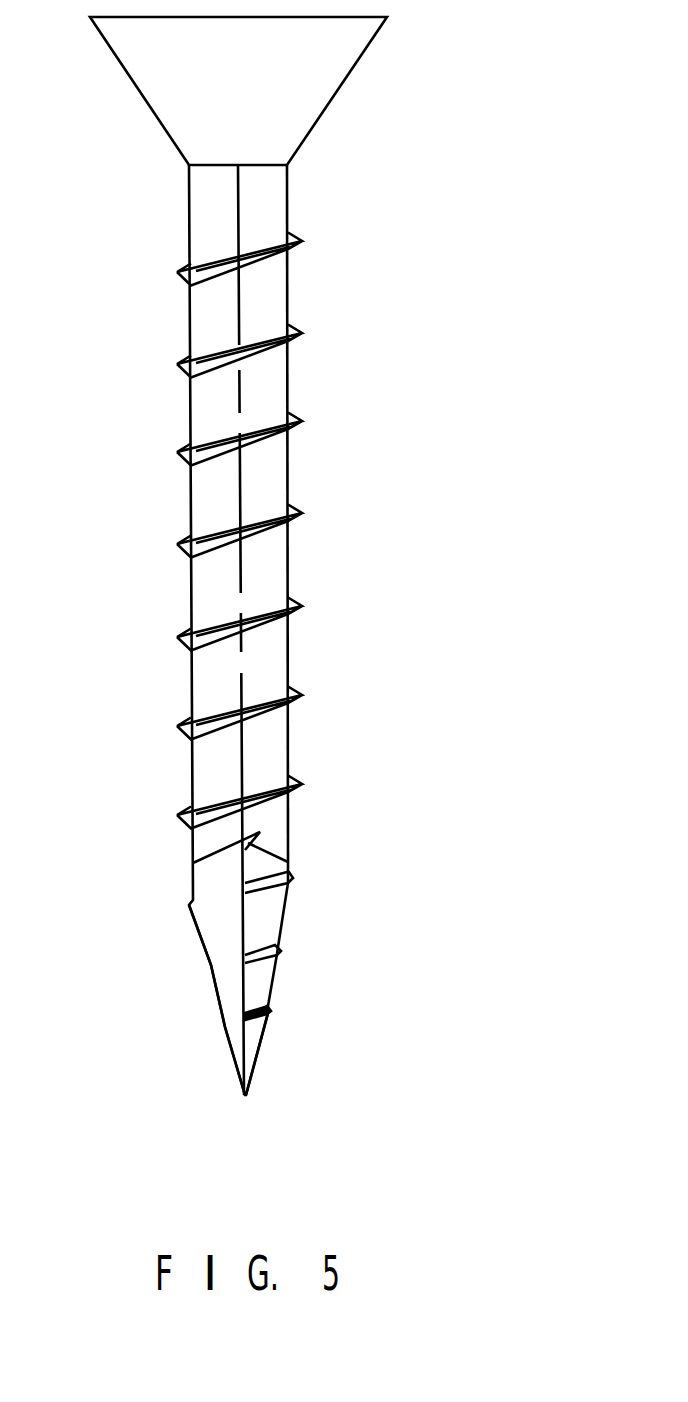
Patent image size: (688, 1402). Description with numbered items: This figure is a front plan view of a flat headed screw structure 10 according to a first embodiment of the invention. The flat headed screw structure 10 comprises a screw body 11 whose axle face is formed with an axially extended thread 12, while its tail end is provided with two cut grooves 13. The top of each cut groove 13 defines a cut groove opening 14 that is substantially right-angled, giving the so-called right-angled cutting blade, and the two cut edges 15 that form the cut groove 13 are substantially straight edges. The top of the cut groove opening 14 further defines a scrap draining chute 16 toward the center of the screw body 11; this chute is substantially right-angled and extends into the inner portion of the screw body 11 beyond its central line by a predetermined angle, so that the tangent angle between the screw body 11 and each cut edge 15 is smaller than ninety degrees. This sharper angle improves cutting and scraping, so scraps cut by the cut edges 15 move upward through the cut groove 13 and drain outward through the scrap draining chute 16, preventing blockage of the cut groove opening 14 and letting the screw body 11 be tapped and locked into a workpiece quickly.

The flat headed screw structure 10 is at (308, 556).
The screw body 11 is at (193, 687).
The thread 12 is at (297, 688).
The cut groove 13 is at (228, 928).
The cut groove opening 14 is at (235, 861).
The cut edge 15 is at (243, 992).
The scrap draining chute 16 is at (285, 882).